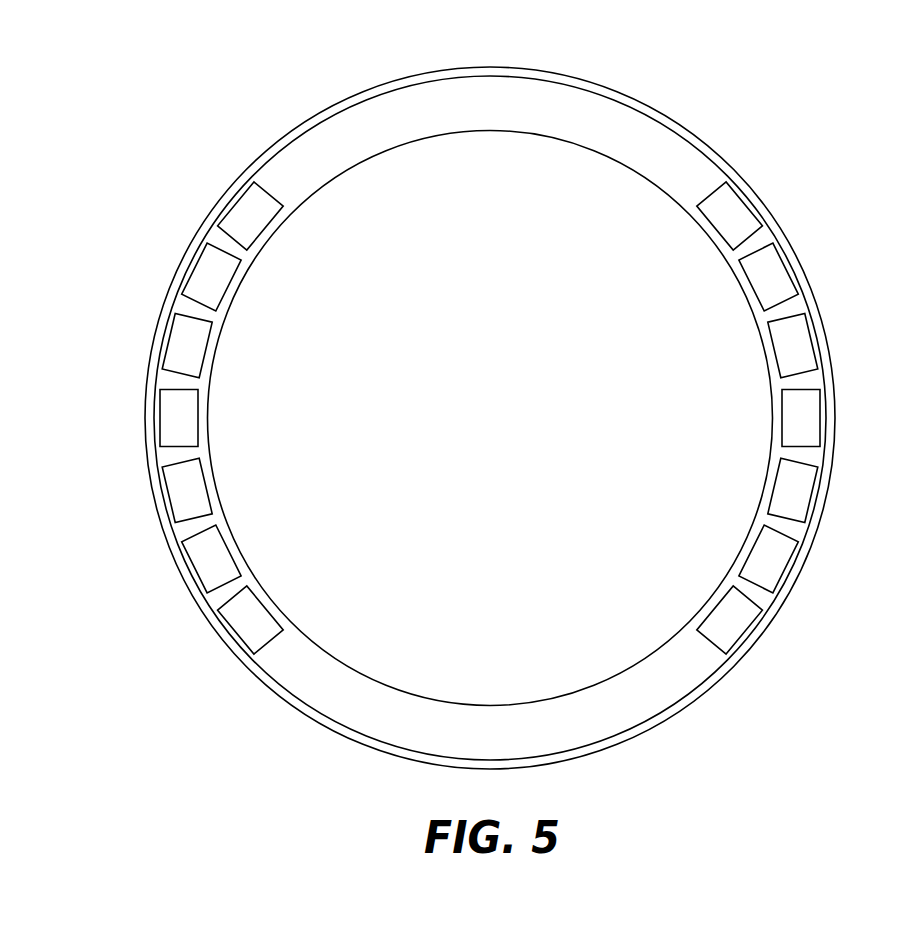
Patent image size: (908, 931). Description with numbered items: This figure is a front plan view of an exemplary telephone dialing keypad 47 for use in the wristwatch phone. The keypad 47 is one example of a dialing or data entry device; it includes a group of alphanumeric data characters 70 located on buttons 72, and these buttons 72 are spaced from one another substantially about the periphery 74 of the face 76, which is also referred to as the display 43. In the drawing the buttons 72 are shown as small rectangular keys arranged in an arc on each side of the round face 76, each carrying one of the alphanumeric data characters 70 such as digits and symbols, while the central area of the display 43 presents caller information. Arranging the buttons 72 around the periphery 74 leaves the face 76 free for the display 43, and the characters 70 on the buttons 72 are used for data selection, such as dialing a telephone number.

The display 43 is at (504, 586).
The telephone dialing keypad 47 is at (493, 410).
The alphanumeric data characters 70 is at (773, 276).
The buttons 72 is at (788, 294).
The periphery 74 is at (332, 175).
The face 76 is at (397, 177).